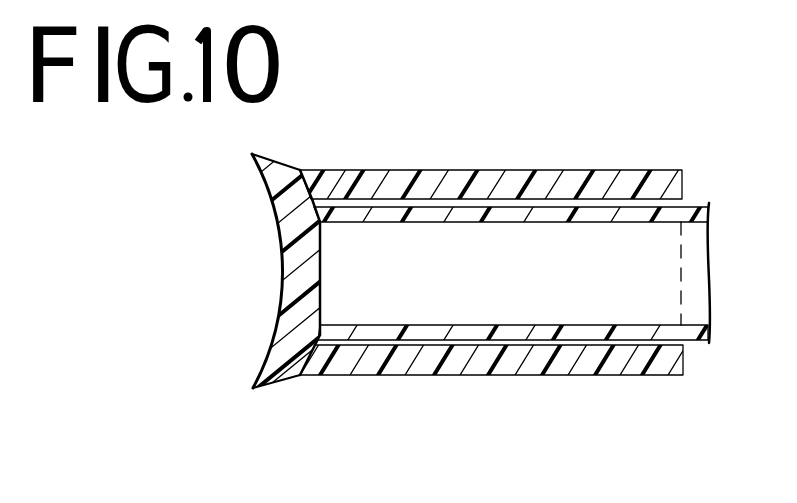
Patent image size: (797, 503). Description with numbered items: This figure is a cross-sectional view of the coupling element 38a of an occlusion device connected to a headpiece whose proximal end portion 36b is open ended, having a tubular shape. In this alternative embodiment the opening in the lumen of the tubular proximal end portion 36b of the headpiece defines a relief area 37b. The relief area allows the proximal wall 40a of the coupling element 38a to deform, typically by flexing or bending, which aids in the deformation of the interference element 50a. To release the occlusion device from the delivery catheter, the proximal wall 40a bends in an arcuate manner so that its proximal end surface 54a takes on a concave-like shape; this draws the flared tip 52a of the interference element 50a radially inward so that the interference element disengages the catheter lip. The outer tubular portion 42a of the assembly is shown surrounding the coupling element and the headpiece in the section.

The coupling element 38a is at (628, 157).
The outer tube 42a is at (458, 190).
The proximal end portion 36b is at (512, 208).
The relief area 37b is at (342, 298).
The proximal wall 40a is at (320, 278).
The interference element 50a is at (290, 336).
The flared tip 52a is at (252, 154).
The proximal end surface 54a is at (282, 288).